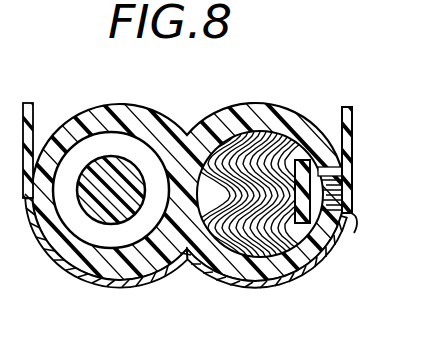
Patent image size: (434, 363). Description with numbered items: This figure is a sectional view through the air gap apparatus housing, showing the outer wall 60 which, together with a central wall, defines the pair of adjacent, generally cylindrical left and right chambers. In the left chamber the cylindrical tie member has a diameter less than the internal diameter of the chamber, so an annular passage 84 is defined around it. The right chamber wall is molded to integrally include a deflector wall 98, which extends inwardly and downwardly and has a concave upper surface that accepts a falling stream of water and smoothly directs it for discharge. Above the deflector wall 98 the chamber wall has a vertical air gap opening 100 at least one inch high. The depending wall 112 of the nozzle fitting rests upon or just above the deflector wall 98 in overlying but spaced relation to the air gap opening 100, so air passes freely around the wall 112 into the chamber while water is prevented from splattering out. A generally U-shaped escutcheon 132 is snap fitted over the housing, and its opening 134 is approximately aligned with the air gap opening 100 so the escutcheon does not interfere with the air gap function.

The outer wall 60 is at (87, 104).
The annular passage 84 is at (137, 152).
The deflector wall 98 is at (266, 152).
The air gap opening 100 is at (343, 175).
The depending wall 112 is at (304, 160).
The escutcheon 132 is at (128, 283).
The opening 134 is at (349, 226).